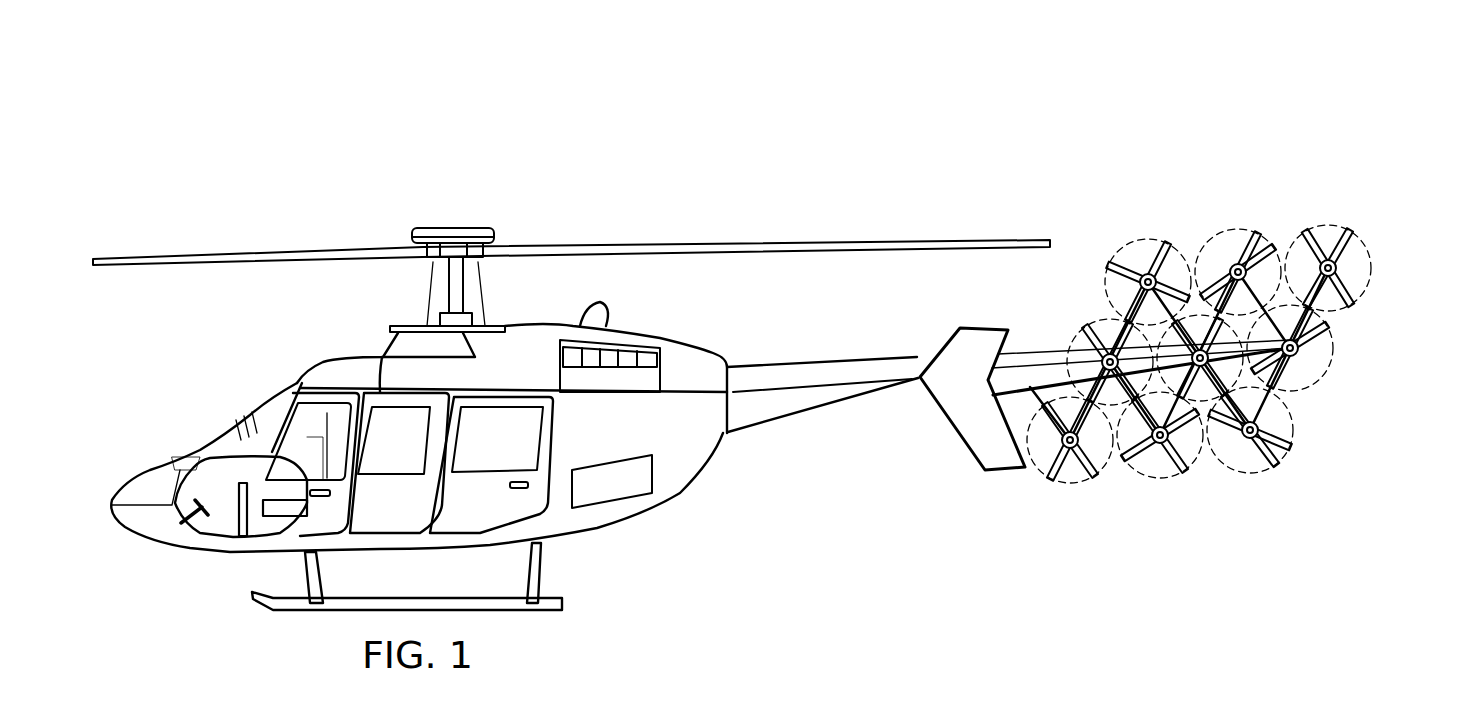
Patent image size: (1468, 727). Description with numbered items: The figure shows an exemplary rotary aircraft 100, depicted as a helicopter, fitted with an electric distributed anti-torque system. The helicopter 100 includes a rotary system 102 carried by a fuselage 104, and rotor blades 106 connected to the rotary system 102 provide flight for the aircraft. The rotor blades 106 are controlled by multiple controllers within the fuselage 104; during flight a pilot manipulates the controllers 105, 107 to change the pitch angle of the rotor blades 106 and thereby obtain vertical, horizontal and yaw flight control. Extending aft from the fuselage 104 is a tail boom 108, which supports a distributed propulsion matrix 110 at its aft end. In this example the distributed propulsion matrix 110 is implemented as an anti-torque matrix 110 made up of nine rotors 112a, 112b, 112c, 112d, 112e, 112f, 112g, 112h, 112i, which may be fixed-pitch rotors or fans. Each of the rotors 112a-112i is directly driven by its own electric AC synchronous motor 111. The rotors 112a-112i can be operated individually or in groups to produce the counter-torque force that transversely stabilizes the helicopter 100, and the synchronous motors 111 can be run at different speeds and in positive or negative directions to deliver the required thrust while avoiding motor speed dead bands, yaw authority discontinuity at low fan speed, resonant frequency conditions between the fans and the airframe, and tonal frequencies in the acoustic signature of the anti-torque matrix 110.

The rotary aircraft 100 is at (268, 181).
The rotary system 102 is at (455, 215).
The fuselage 104 is at (141, 537).
The controller 105 is at (233, 490).
The rotor blades 106 is at (764, 241).
The controller 107 is at (196, 522).
The tail boom 108 is at (827, 421).
The distributed propulsion matrix 110 is at (1225, 124).
The electric motor 111 is at (1340, 267).
The rotor 112a is at (1122, 258).
The rotor 112b is at (1295, 210).
The rotor 112c is at (1355, 284).
The rotor 112d is at (1072, 332).
The rotor 112e is at (1176, 303).
The rotor 112f is at (1312, 350).
The rotor 112g is at (1072, 487).
The rotor 112h is at (1158, 459).
The rotor 112i is at (1294, 430).